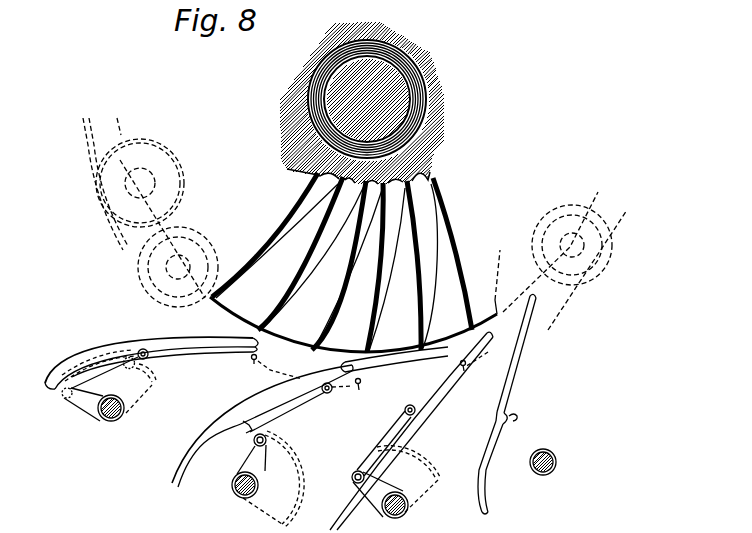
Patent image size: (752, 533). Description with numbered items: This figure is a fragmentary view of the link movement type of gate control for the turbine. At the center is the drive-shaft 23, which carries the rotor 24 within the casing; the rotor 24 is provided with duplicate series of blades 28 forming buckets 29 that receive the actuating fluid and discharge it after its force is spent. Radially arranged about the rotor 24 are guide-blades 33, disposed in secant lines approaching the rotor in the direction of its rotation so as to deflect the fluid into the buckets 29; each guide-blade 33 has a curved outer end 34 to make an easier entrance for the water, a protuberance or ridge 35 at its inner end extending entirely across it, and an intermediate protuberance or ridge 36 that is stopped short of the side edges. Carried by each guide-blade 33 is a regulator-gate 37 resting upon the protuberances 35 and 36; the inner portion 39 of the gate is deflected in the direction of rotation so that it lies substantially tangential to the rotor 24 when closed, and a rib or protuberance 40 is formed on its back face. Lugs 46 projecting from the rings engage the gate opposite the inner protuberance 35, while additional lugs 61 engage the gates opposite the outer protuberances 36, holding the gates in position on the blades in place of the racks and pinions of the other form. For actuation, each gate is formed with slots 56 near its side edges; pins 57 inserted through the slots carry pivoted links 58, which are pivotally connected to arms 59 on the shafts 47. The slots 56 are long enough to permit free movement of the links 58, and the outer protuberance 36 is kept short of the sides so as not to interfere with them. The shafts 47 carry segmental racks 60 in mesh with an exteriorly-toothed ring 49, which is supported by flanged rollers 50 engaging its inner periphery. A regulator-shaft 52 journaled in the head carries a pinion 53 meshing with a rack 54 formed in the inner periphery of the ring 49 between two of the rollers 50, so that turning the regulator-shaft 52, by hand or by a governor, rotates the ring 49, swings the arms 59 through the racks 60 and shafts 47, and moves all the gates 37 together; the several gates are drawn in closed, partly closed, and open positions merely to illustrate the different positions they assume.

The drive-shaft 23 is at (405, 97).
The rotor 24 is at (428, 140).
The blades 28 is at (278, 231).
The buckets 29 is at (326, 267).
The guide-blades 33 is at (514, 372).
The curved outer ends 34 is at (487, 488).
The protuberance or ridge 35 is at (432, 351).
The protuberance or ridge 36 is at (496, 417).
The regulator-gate 37 is at (187, 354).
The inner portion of the gate 39 is at (483, 354).
The rib or protuberance 40 is at (193, 346).
The lugs 46 is at (255, 364).
The shafts 47 is at (122, 418).
The exteriorly-toothed ring 49 is at (280, 362).
The flanged rollers 50 is at (147, 296).
The regulator-shaft 52 is at (160, 181).
The pinion 53 is at (176, 205).
The rack 54 is at (95, 168).
The slots 56 is at (130, 349).
The pins 57 is at (147, 350).
The links 58 is at (118, 371).
The arms 59 is at (83, 403).
The segmental racks 60 is at (302, 474).
The lugs 61 is at (147, 368).